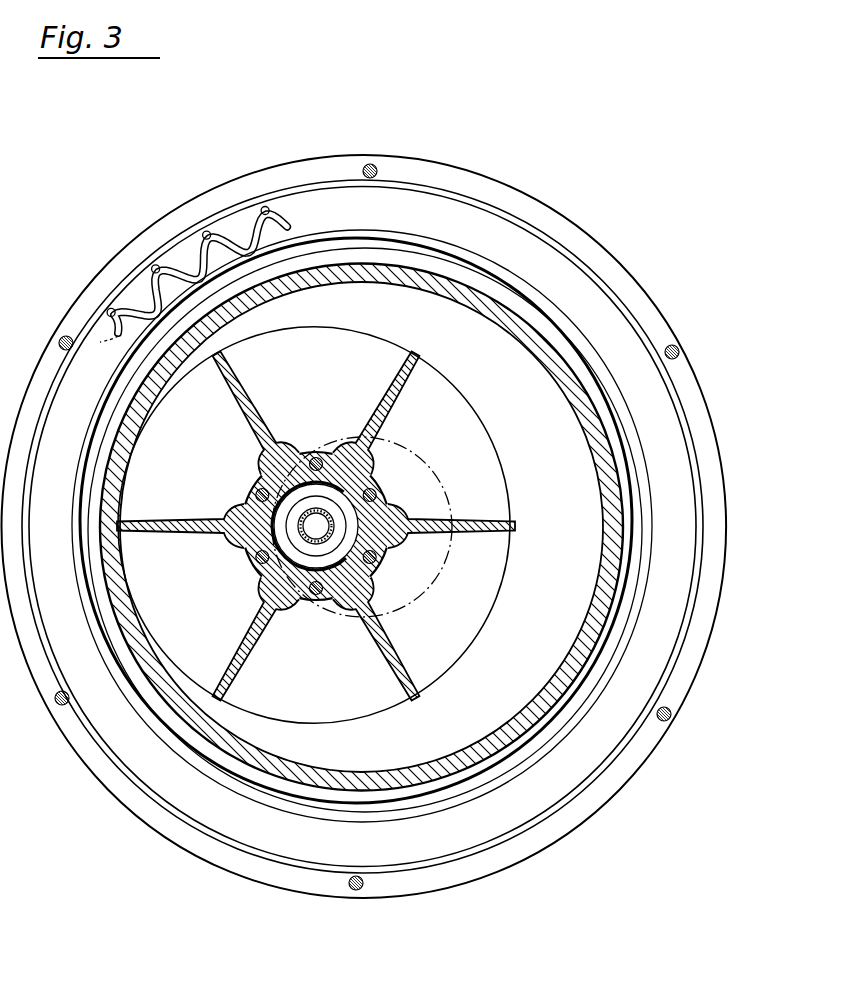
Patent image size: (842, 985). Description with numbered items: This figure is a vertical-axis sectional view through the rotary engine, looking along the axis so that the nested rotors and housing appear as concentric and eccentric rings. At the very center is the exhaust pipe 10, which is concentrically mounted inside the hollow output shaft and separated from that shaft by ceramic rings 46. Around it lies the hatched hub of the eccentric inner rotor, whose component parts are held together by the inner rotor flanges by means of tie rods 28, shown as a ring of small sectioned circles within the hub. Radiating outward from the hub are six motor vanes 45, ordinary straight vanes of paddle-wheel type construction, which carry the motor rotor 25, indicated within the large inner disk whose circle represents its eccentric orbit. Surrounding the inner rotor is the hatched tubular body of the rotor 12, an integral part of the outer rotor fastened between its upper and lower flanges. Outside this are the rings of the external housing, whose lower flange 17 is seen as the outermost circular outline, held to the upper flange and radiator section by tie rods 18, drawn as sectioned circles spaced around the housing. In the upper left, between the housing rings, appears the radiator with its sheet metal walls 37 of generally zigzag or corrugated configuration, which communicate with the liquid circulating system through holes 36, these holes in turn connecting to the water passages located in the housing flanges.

The exhaust pipe 10 is at (324, 525).
The tubular body of the rotor 12 is at (607, 487).
The lower flange 17 is at (236, 878).
The tie rods 18 is at (679, 352).
The motor rotor 25 is at (418, 652).
The tie rods 28 is at (259, 553).
The holes 36 is at (111, 308).
The sheet metal walls 37 is at (173, 256).
The motor vanes 45 is at (396, 408).
The ceramic rings 46 is at (303, 546).